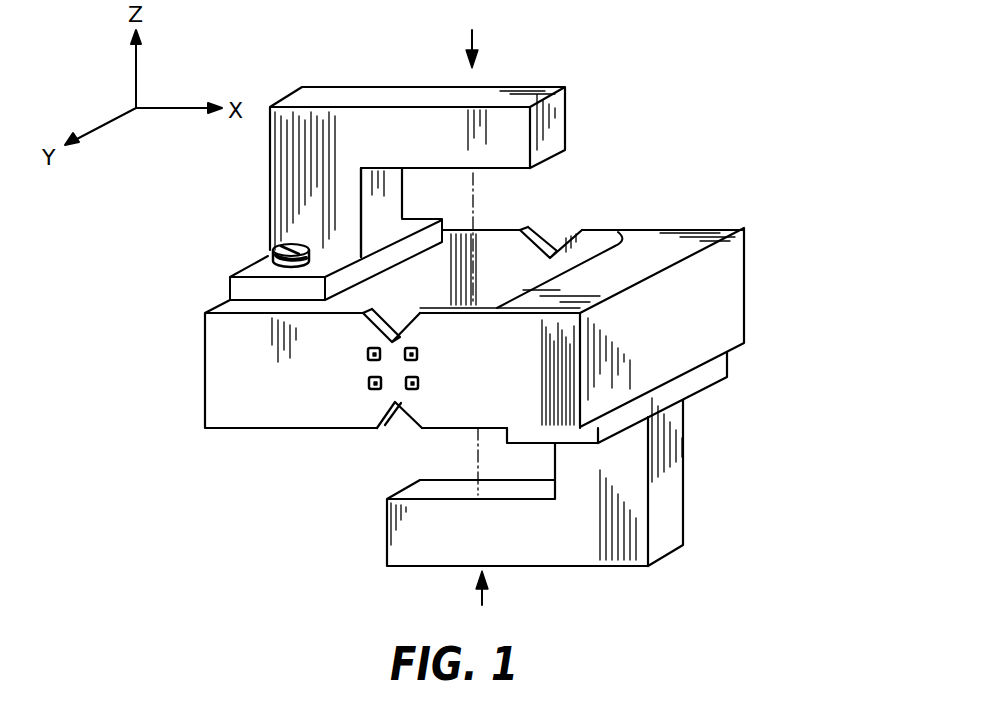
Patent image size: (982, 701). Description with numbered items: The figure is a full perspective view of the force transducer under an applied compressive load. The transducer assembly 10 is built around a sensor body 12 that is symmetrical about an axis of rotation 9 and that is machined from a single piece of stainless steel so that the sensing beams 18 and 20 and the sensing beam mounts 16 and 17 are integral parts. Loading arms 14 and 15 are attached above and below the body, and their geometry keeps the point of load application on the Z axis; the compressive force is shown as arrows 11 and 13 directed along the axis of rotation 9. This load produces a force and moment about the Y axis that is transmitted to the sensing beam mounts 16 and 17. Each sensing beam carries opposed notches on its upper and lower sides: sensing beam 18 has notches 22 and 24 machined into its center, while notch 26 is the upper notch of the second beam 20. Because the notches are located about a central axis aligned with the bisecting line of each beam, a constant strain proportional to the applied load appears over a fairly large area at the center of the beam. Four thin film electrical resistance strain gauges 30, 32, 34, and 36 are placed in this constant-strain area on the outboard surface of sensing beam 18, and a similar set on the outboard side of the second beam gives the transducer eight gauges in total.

The axis of rotation 9 is at (474, 212).
The transducer assembly 10 is at (640, 202).
The force arrow 11 is at (472, 30).
The sensor body 12 is at (543, 316).
The force arrow 13 is at (484, 604).
The loading arm 14 is at (432, 150).
The loading arm 15 is at (386, 300).
The loading arm / sensing beam mount 16 is at (533, 547).
The sensing beam mount 17 is at (673, 345).
The sensing beam 18 is at (261, 370).
The sensing beam 20 is at (520, 288).
The notch 22 is at (398, 314).
The notch 24 is at (390, 414).
The notch 26 is at (542, 233).
The electrical resistance strain gauge 30 is at (366, 355).
The electrical resistance strain gauge 32 is at (368, 385).
The electrical resistance strain gauge 34 is at (418, 359).
The electrical resistance strain gauge 36 is at (416, 391).